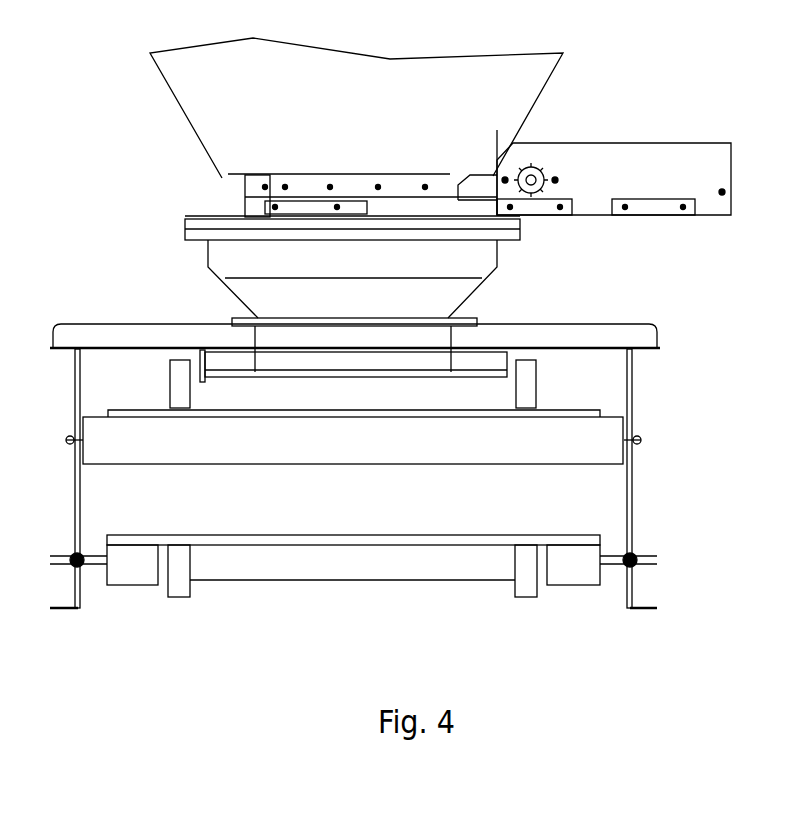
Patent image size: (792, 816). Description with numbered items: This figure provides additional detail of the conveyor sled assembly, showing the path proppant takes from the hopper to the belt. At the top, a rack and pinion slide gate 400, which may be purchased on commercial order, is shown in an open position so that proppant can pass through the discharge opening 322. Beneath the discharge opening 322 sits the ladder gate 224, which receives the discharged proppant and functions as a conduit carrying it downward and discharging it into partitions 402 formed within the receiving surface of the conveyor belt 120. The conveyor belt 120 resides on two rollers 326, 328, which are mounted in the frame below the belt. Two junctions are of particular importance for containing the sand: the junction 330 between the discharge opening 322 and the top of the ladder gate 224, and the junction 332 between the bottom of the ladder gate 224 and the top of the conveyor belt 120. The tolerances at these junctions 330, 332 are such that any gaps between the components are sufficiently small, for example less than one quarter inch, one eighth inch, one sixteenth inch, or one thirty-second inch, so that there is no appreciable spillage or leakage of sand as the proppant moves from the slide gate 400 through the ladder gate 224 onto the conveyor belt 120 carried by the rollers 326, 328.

The discharge opening 322 is at (388, 150).
The rack and pinion slide gate 400 is at (592, 152).
The junction 330 is at (168, 228).
The ladder gate 224 is at (538, 250).
The partitions 402 is at (203, 350).
The junction 332 is at (514, 352).
The conveyor belt 120 is at (356, 374).
The roller 326 is at (353, 437).
The roller 328 is at (353, 566).